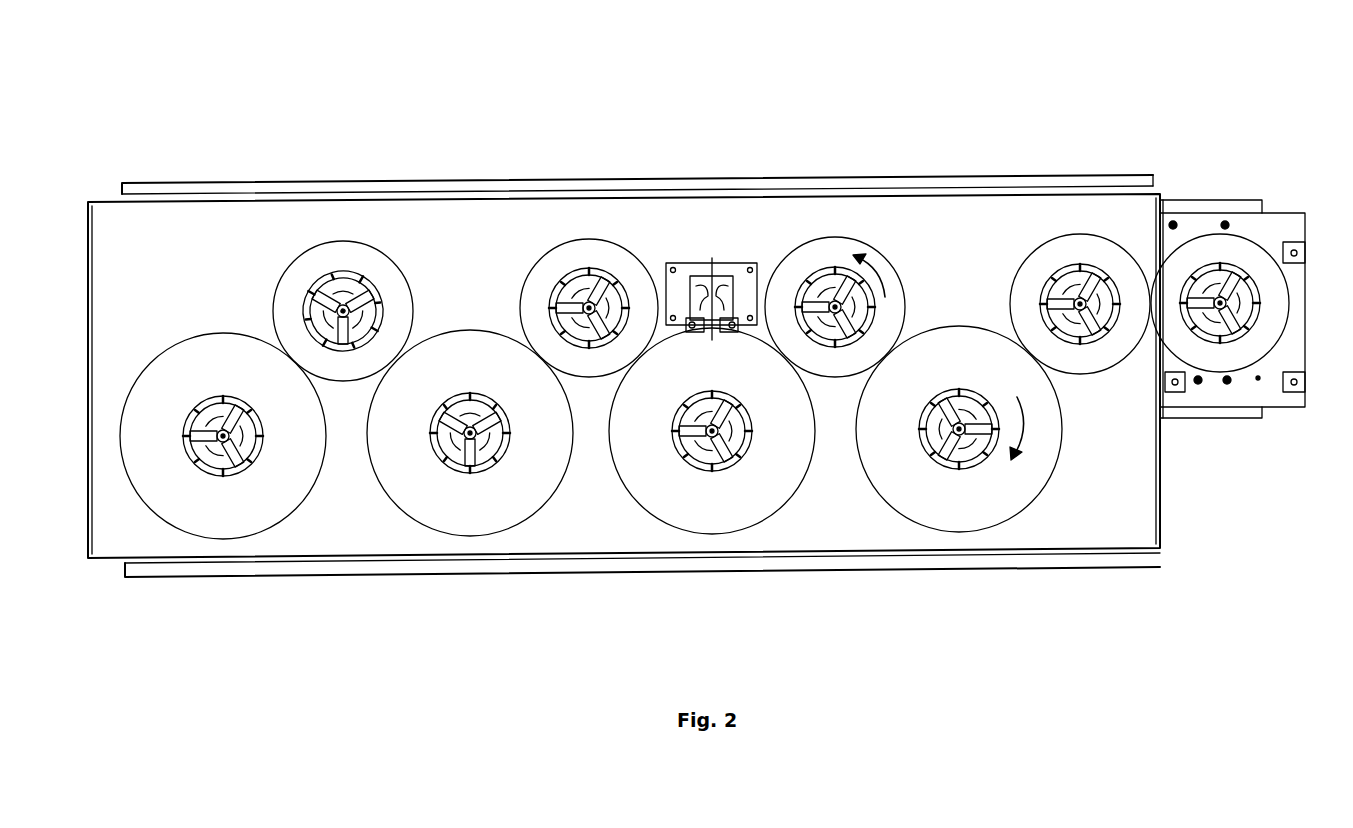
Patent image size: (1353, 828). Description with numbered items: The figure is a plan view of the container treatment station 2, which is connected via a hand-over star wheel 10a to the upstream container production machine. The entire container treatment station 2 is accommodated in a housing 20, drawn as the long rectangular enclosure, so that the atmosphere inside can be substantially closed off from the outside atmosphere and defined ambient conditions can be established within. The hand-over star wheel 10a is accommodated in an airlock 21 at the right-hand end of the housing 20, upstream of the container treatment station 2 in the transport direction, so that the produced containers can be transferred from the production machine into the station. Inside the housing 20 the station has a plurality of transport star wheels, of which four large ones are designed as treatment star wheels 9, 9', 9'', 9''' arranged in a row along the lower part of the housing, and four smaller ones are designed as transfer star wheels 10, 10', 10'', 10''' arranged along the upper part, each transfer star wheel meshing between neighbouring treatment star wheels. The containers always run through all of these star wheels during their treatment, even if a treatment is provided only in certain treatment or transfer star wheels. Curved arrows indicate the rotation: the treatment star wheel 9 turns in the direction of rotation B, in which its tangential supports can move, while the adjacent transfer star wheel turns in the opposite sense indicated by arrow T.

The container treatment station 2 is at (947, 117).
The housing 20 is at (100, 200).
The airlock 21 is at (1167, 220).
The transfer star wheel 10 is at (1080, 238).
The transfer star wheel 10' is at (835, 232).
The transfer star wheel 10'' is at (589, 243).
The transfer star wheel 10''' is at (343, 244).
The hand-over star wheel 10a is at (1267, 263).
The treatment star wheel 9 is at (959, 482).
The treatment star wheel 9' is at (712, 484).
The treatment star wheel 9'' is at (470, 488).
The treatment star wheel 9''' is at (223, 505).
The rotation direction of upper roller T is at (883, 272).
The direction of rotation B is at (1023, 437).